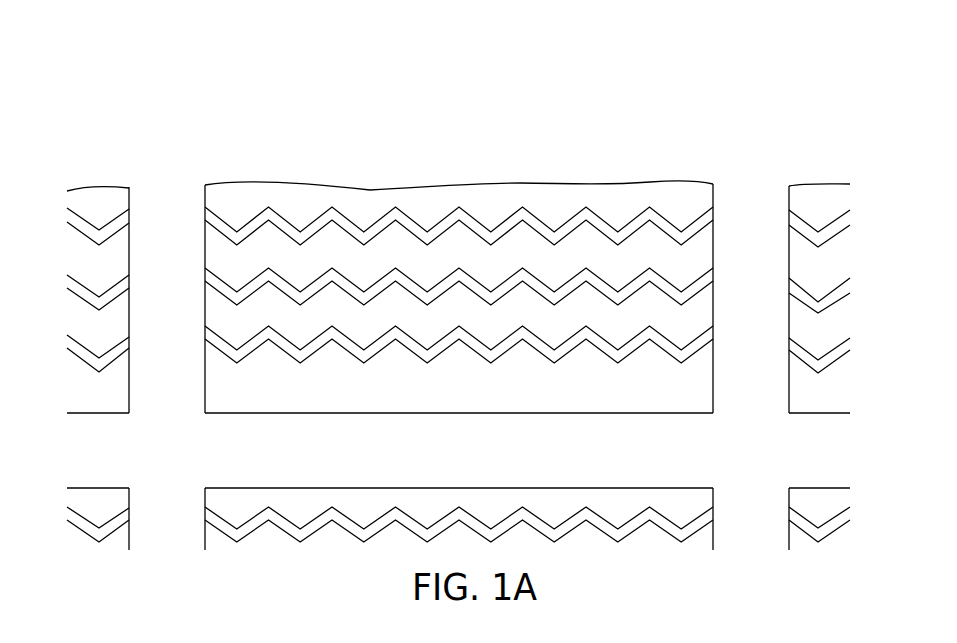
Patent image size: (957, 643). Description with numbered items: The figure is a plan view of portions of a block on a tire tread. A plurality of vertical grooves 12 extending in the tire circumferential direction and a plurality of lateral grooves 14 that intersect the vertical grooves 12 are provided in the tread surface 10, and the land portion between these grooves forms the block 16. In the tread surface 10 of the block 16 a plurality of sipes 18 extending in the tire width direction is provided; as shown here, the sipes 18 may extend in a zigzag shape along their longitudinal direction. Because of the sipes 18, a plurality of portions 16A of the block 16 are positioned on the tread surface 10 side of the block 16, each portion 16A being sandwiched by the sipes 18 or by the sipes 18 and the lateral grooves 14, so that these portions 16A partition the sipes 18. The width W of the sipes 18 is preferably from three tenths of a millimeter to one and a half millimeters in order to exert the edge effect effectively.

The tread surface 10 is at (627, 180).
The vertical groove 12 is at (181, 307).
The lateral groove 14 is at (463, 462).
The block 16 is at (100, 215).
The portion of the block 16A is at (585, 305).
The sipe 18 is at (353, 284).
The width of the sipes W is at (288, 307).